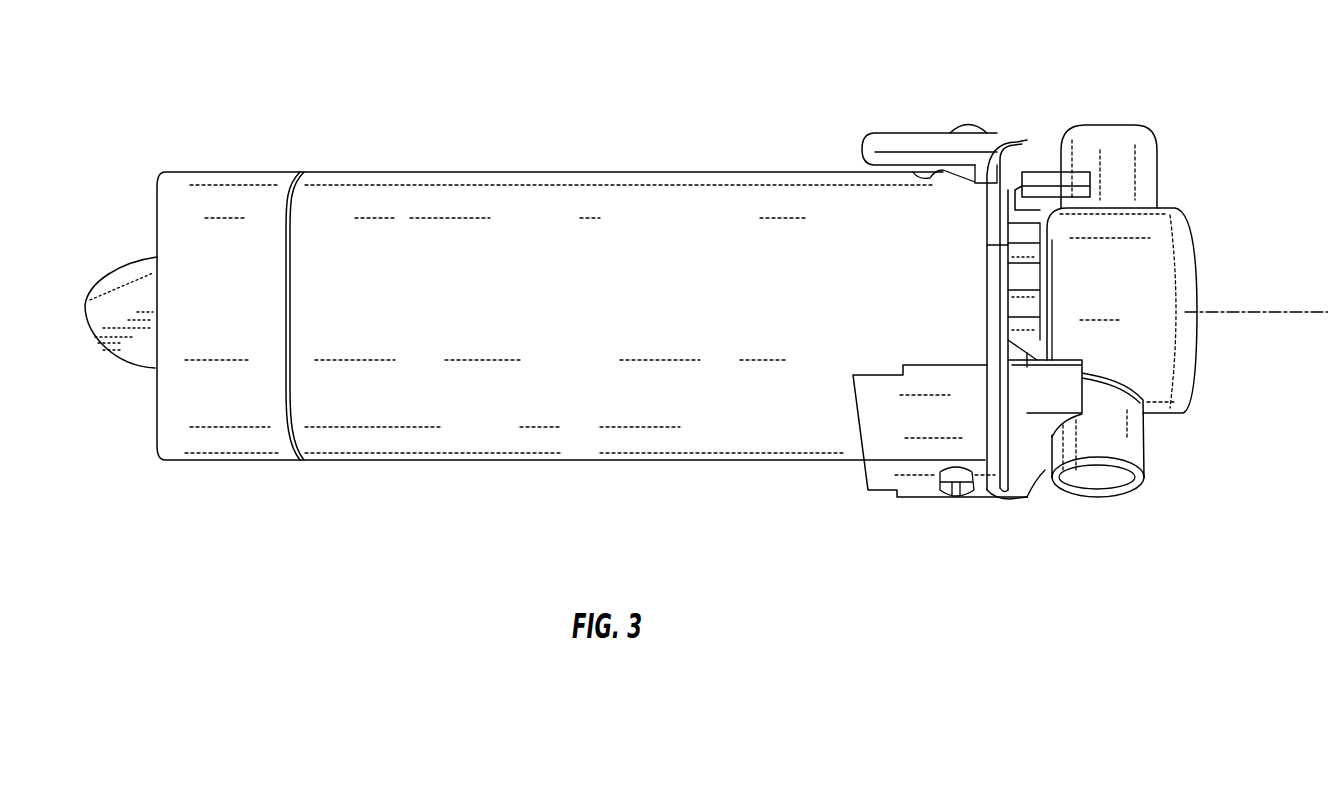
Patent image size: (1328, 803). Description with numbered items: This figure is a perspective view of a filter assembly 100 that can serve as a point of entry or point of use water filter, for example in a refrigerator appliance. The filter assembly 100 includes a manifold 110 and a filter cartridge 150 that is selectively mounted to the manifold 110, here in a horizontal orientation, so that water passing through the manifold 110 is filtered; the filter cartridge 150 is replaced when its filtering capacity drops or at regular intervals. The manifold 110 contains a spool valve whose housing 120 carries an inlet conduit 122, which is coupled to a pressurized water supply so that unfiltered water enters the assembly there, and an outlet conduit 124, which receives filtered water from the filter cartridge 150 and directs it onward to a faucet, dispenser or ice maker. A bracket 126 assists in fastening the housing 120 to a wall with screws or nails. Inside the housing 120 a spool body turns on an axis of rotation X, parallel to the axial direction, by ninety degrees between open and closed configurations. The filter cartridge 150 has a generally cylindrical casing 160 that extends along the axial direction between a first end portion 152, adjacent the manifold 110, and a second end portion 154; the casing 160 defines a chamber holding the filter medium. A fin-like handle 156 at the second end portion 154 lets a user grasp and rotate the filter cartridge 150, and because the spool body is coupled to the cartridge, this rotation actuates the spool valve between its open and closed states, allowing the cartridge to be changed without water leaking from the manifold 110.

The filter assembly 100 is at (1043, 637).
The manifold 110 is at (1040, 160).
The housing 120 is at (1167, 404).
The inlet conduit 122 is at (1147, 163).
The outlet conduit 124 is at (1093, 482).
The bracket 126 is at (918, 498).
The filter cartridge 150 is at (467, 460).
The first end portion 152 is at (970, 228).
The second end portion 154 is at (173, 483).
The handle 156 is at (129, 295).
The casing 160 is at (665, 237).
The axis of rotation X is at (1265, 318).